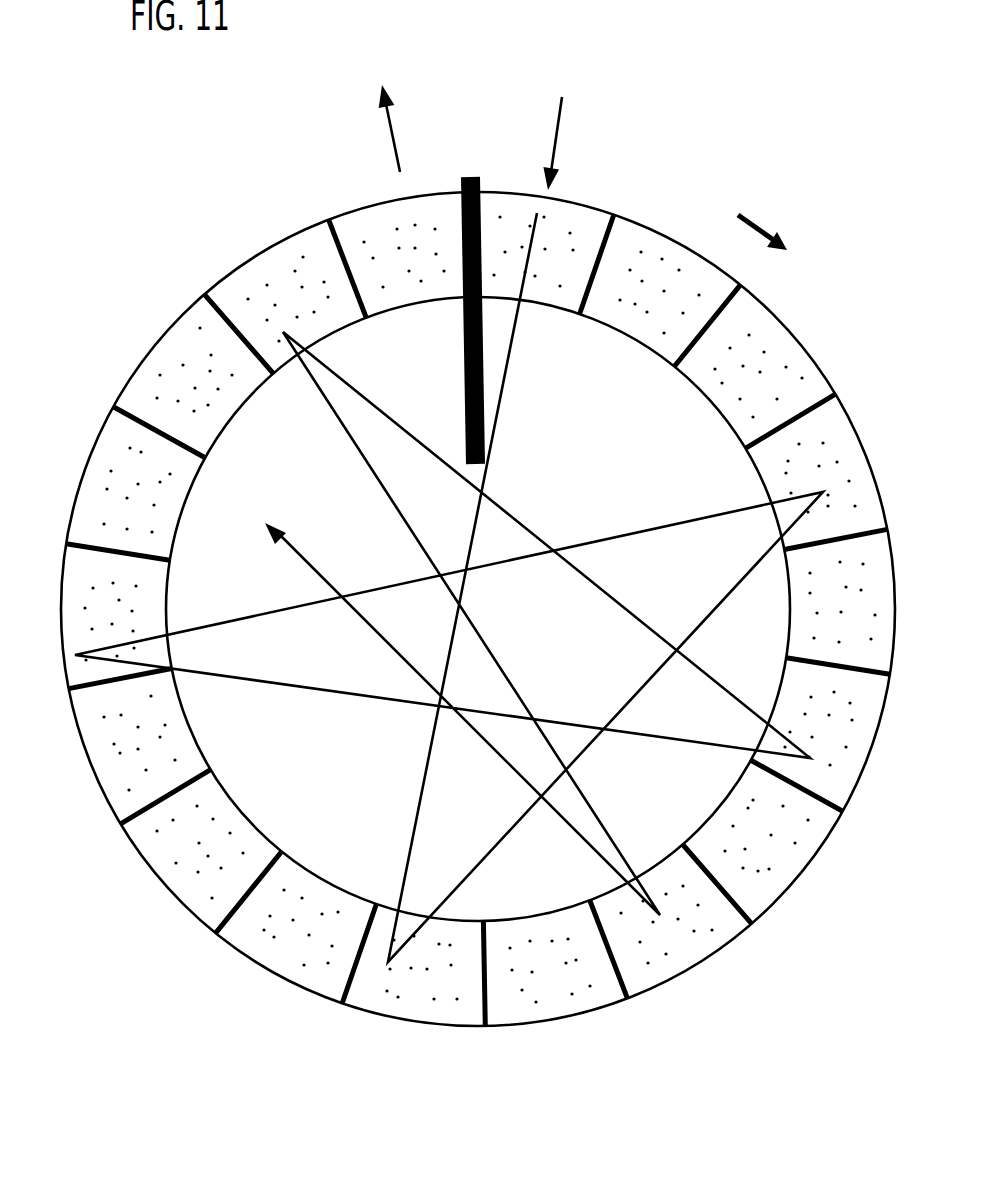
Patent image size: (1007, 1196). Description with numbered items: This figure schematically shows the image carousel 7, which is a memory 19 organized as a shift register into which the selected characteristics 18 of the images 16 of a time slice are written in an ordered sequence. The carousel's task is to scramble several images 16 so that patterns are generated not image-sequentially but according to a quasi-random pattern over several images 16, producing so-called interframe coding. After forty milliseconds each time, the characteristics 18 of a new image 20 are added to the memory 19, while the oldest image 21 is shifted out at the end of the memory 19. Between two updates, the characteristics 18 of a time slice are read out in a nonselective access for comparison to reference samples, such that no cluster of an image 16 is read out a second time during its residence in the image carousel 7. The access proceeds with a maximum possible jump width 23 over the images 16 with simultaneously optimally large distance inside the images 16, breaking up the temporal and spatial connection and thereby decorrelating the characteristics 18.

The image carousel 7 is at (186, 238).
The images 16 is at (587, 232).
The characteristics 18 is at (177, 345).
The memory 19 is at (234, 985).
The new image 20 is at (561, 133).
The oldest image 21 is at (391, 123).
The jump width 23 is at (352, 443).